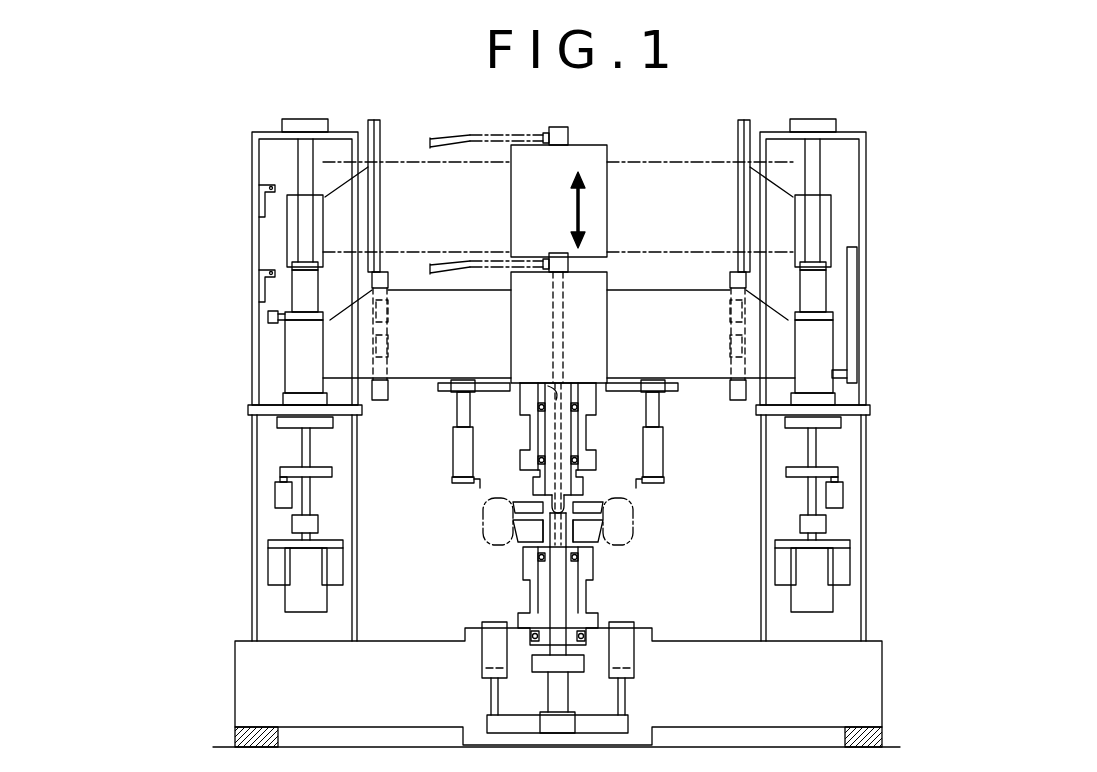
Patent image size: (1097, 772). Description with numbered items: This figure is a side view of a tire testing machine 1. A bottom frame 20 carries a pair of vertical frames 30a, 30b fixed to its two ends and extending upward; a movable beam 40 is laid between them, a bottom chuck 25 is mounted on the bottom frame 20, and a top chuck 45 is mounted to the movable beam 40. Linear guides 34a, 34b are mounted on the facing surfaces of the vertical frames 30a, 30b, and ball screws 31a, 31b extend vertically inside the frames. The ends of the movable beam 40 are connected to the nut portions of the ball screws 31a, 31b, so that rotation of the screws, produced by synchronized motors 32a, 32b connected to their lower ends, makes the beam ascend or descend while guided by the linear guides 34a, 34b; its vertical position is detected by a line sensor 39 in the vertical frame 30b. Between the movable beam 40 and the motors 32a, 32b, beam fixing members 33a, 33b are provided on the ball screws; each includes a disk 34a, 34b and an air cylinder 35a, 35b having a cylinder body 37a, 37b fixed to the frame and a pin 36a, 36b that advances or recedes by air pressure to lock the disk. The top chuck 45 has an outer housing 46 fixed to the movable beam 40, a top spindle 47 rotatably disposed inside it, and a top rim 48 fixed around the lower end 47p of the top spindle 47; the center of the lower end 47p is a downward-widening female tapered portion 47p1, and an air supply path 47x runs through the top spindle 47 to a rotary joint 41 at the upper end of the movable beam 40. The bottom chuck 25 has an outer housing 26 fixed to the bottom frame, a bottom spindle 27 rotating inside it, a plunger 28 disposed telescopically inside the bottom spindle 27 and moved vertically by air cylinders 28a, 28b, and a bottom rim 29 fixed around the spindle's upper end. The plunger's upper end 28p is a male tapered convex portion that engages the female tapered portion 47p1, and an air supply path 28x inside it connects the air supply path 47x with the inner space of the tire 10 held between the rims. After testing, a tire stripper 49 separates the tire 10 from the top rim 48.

The tire testing machine 1 is at (1002, 128).
The tire 10 is at (617, 545).
The bottom frame 20 is at (880, 668).
The bottom chuck 25 is at (415, 490).
The outer housing 26 is at (535, 590).
The bottom spindle 27 is at (530, 548).
The plunger 28 is at (530, 522).
The air cylinder 28a is at (492, 700).
The air cylinder 28b is at (620, 700).
The upper end of plunger 28p is at (548, 503).
The air supply path 28x is at (548, 500).
The bottom rim 29 is at (522, 537).
The vertical frame 30a is at (252, 152).
The vertical frame 30b is at (867, 150).
The ball screw 31a is at (305, 172).
The ball screw 31b is at (813, 170).
The motor 32a is at (298, 600).
The motor 32b is at (820, 593).
The beam fixing member 33a is at (96, 403).
The beam fixing member 33b is at (1016, 403).
The linear guide / disk 34a is at (380, 133).
The linear guide / disk 34b is at (737, 143).
The air cylinder 35a is at (160, 458).
The air cylinder 35b is at (958, 458).
The pin 36a is at (283, 484).
The pin 36b is at (838, 480).
The cylinder body 37a is at (277, 497).
The cylinder body 37b is at (842, 495).
The line sensor 39 is at (852, 308).
The movable beam 40 is at (468, 287).
The rotary joint 41 is at (570, 264).
The top chuck 45 is at (717, 428).
The outer housing 46 is at (580, 432).
The top spindle 47 is at (572, 443).
The lower end of top spindle 47p is at (597, 505).
The female tapered portion 47p1 is at (615, 513).
The air supply path 47x is at (562, 385).
The top rim 48 is at (600, 518).
The tire stripper 49 is at (660, 410).